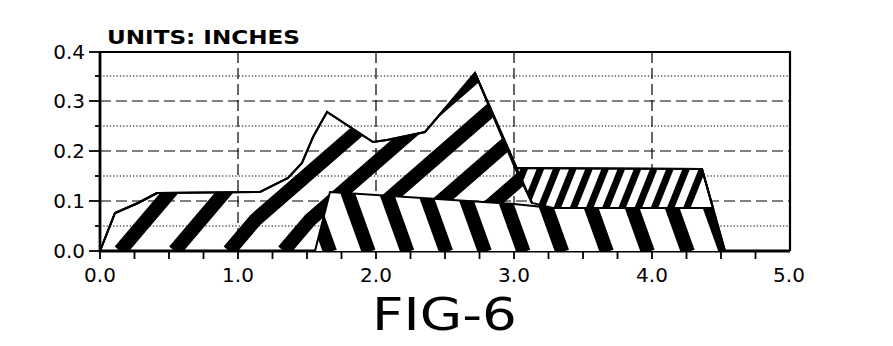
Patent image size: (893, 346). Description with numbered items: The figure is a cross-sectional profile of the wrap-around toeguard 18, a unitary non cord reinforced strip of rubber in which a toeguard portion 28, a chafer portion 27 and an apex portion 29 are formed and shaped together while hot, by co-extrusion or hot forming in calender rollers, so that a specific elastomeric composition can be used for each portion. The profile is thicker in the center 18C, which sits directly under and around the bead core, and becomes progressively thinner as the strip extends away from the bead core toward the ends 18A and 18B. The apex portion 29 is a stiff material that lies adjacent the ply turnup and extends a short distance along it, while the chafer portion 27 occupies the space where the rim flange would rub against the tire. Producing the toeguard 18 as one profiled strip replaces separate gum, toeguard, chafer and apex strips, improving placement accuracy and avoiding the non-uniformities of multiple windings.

The wrap-around toeguard 18 is at (590, 156).
The first end of the wrap-around toeguard 18A is at (99, 252).
The second end of the wrap-around toeguard 18B is at (727, 249).
The center of the wrap-around toeguard 18C is at (327, 111).
The chafer portion 27 is at (680, 169).
The toeguard portion 28 is at (500, 167).
The apex portion 29 is at (588, 250).